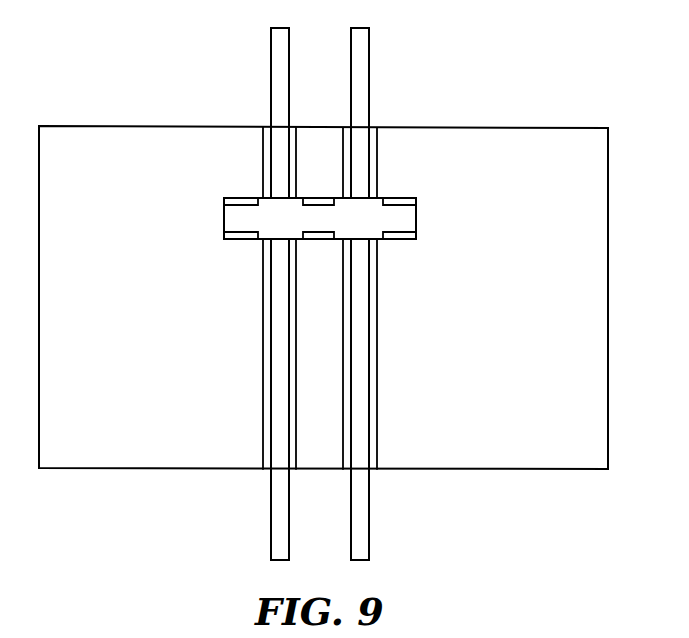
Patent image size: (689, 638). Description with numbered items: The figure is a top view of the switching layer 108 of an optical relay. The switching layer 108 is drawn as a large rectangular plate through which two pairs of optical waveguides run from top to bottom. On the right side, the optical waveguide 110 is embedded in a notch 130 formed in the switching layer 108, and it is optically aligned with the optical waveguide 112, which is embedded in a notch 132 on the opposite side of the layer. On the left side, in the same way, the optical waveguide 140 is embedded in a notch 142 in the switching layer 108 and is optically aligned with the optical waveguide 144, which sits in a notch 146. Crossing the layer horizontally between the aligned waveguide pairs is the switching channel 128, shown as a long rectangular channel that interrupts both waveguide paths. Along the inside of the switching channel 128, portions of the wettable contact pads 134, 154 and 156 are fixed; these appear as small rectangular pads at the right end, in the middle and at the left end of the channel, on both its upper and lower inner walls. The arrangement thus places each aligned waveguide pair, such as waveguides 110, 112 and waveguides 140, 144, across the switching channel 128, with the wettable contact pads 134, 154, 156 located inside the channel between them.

The switching layer 108 is at (112, 126).
The optical waveguide 110 is at (369, 537).
The optical waveguide 112 is at (370, 52).
The switching channel 128 is at (363, 213).
The notch 130 is at (372, 471).
The notch 132 is at (372, 132).
The wettable contact pad 134 is at (402, 237).
The optical waveguide 140 is at (271, 537).
The notch 142 is at (268, 471).
The optical waveguide 144 is at (270, 52).
The notch 146 is at (268, 132).
The wettable contact pad 154 is at (320, 233).
The wettable contact pad 156 is at (240, 233).